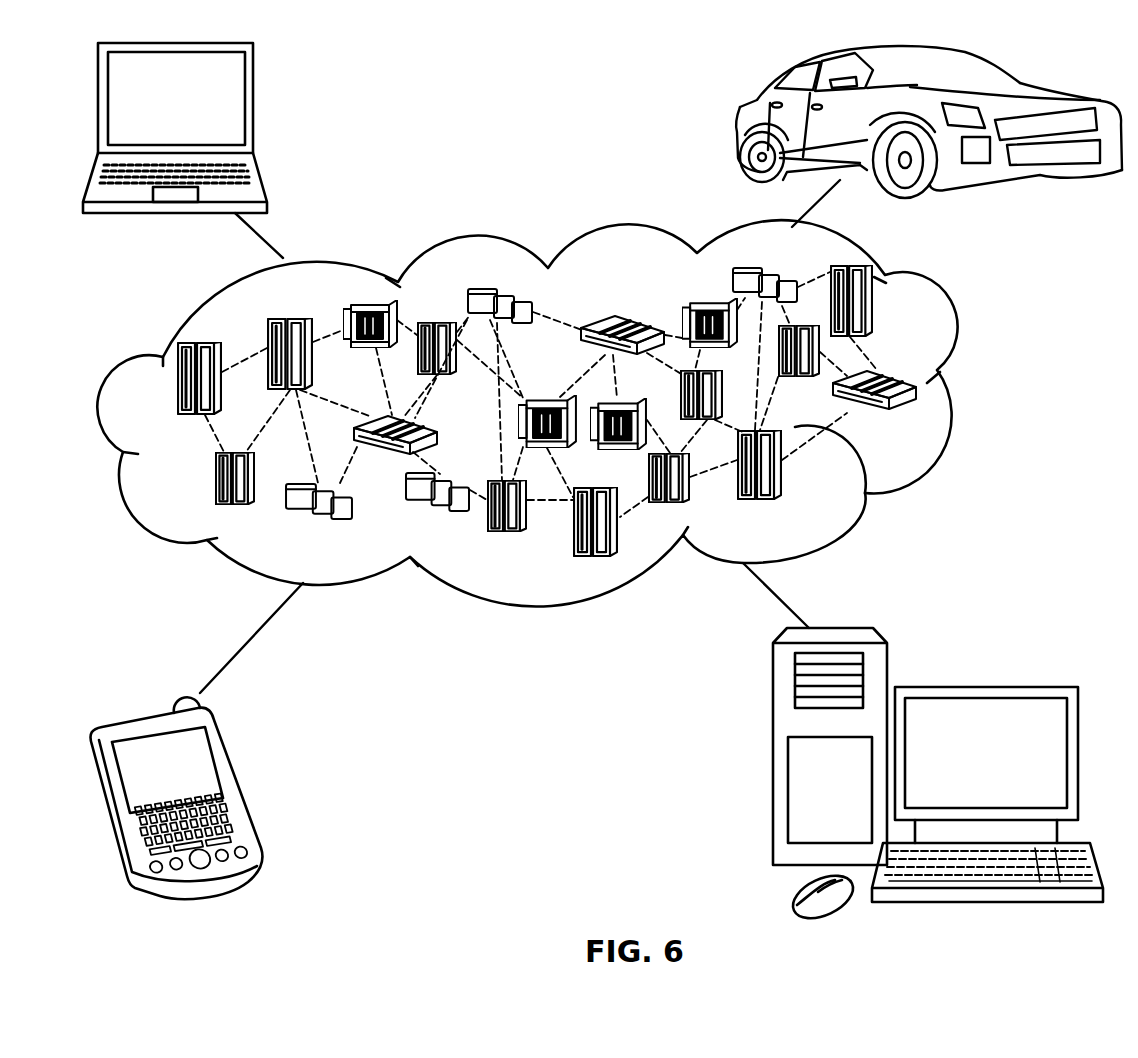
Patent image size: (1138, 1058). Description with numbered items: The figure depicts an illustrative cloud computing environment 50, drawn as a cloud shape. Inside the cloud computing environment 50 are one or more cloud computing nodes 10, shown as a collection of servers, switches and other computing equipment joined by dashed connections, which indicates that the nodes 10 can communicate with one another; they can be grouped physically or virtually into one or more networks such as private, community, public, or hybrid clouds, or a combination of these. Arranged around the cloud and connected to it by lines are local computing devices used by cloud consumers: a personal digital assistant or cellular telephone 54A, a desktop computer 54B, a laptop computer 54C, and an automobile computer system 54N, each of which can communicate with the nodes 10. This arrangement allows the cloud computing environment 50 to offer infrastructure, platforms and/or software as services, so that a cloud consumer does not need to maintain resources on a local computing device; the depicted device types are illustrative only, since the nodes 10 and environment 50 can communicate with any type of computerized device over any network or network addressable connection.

The cloud computing environment 50 is at (987, 391).
The cloud computing nodes 10 is at (919, 425).
The personal digital assistant or cellular telephone 54A is at (240, 786).
The desktop computer 54B is at (985, 687).
The laptop computer 54C is at (253, 107).
The automobile computer system 54N is at (740, 126).